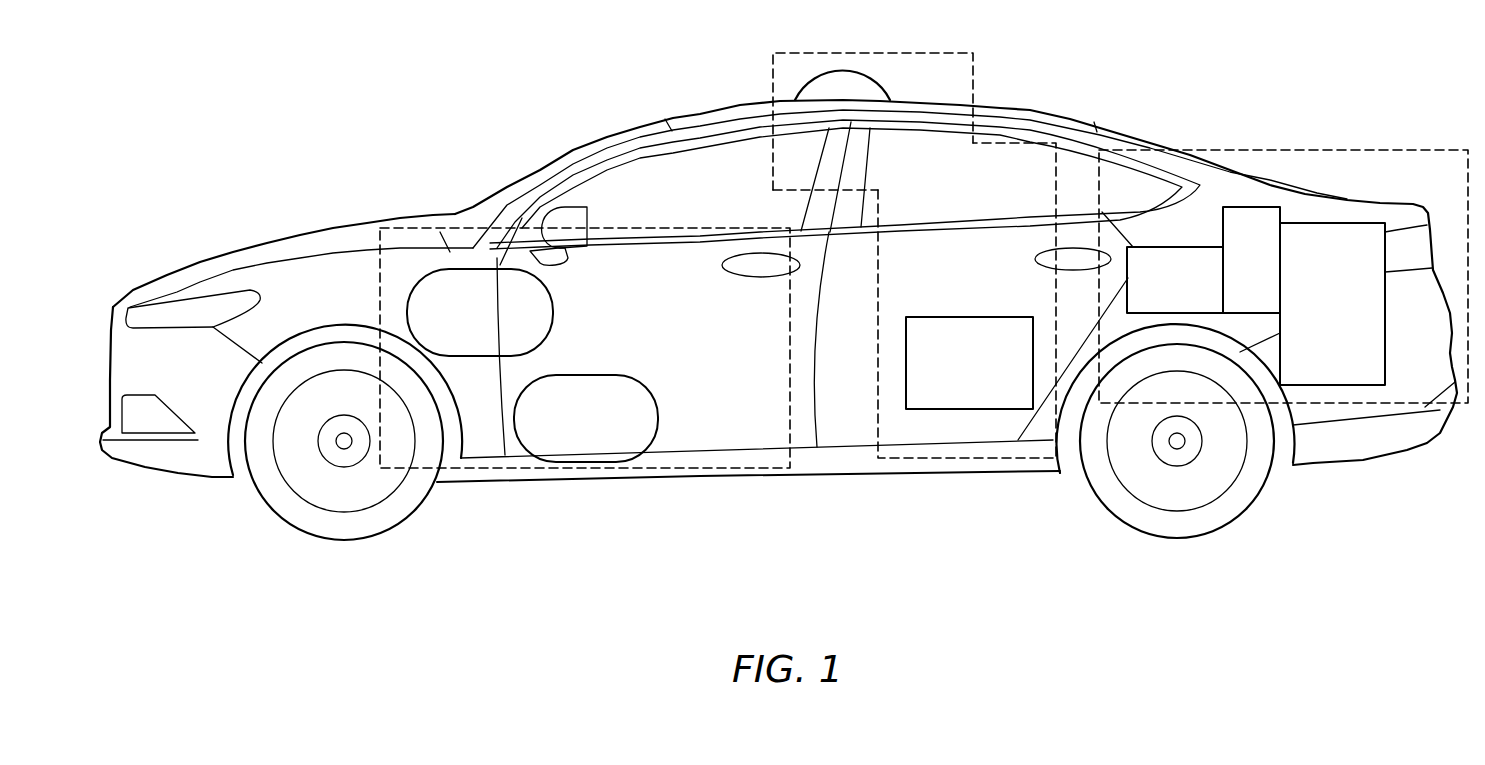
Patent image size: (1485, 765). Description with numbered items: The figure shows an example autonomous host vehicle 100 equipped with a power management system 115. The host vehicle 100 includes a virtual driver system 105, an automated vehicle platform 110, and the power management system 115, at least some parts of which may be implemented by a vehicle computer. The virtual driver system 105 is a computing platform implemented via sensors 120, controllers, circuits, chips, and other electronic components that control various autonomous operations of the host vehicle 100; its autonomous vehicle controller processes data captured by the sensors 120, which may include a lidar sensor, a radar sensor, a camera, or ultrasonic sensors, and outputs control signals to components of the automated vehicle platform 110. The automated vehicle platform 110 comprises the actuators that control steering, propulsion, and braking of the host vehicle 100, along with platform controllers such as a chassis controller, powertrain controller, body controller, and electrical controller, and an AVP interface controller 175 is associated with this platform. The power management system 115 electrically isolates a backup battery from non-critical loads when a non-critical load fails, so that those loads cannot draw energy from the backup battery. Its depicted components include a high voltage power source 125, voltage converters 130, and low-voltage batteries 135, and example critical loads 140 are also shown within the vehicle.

The autonomous host vehicle 100 is at (1060, 98).
The virtual driver system 105 is at (905, 462).
The automated vehicle platform 110 is at (372, 281).
The power management system 115 is at (1378, 148).
The sensors 120 is at (817, 78).
The high voltage power source 125 is at (1362, 223).
The voltage converters 130 is at (1260, 207).
The low-voltage batteries 135 is at (1152, 247).
The critical loads 140 is at (564, 323).
The AVP interface controller 175 is at (932, 317).